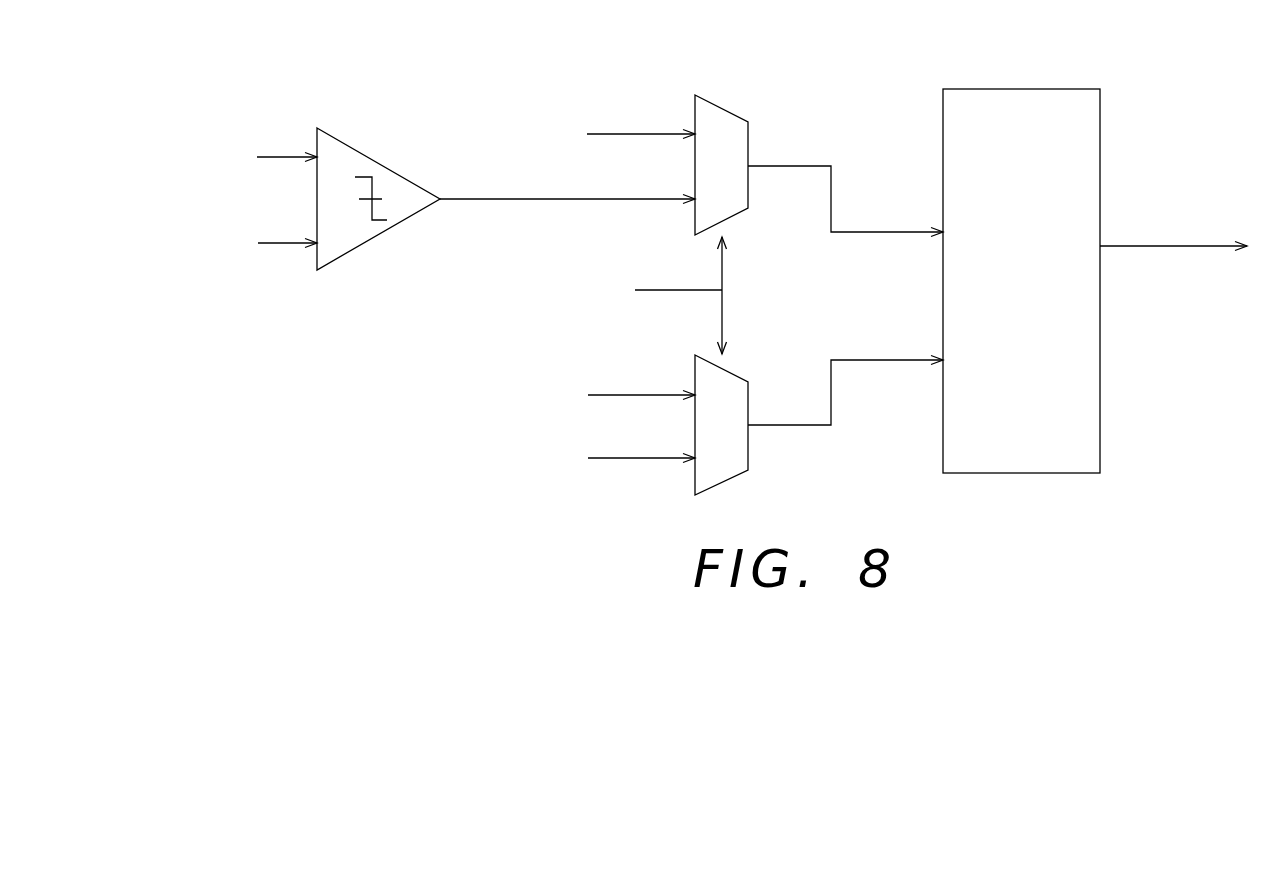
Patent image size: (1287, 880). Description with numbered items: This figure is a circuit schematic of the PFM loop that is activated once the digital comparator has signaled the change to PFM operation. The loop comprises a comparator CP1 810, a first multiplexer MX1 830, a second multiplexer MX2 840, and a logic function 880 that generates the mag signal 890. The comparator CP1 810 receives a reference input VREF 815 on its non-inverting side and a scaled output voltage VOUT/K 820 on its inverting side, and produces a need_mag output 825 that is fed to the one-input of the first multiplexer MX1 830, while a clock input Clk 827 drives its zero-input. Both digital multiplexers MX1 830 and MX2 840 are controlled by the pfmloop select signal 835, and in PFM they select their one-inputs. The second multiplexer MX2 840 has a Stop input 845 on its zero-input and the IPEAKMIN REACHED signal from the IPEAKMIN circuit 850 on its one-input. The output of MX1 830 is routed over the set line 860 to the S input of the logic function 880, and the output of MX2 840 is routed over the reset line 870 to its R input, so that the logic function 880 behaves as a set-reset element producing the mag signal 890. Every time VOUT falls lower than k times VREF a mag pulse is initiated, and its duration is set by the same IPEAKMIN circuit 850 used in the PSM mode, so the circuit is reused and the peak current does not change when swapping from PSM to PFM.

The comparator CP1 810 is at (385, 228).
The reference voltage input VREF 815 is at (225, 141).
The scaled output voltage input VOUT/K 820 is at (215, 228).
The need_mag signal 825 is at (555, 232).
The clock input Clk 827 is at (558, 123).
The first multiplexer MX1 830 is at (716, 105).
The pfmloop select signal 835 is at (610, 276).
The second multiplexer MX2 840 is at (740, 375).
The Stop signal input 845 is at (558, 383).
The IPEAKMIN circuit 850 is at (553, 489).
The set input line S 860 is at (870, 230).
The reset input line R 870 is at (870, 365).
The logic function 880 is at (1055, 89).
The mag signal 890 is at (1137, 243).